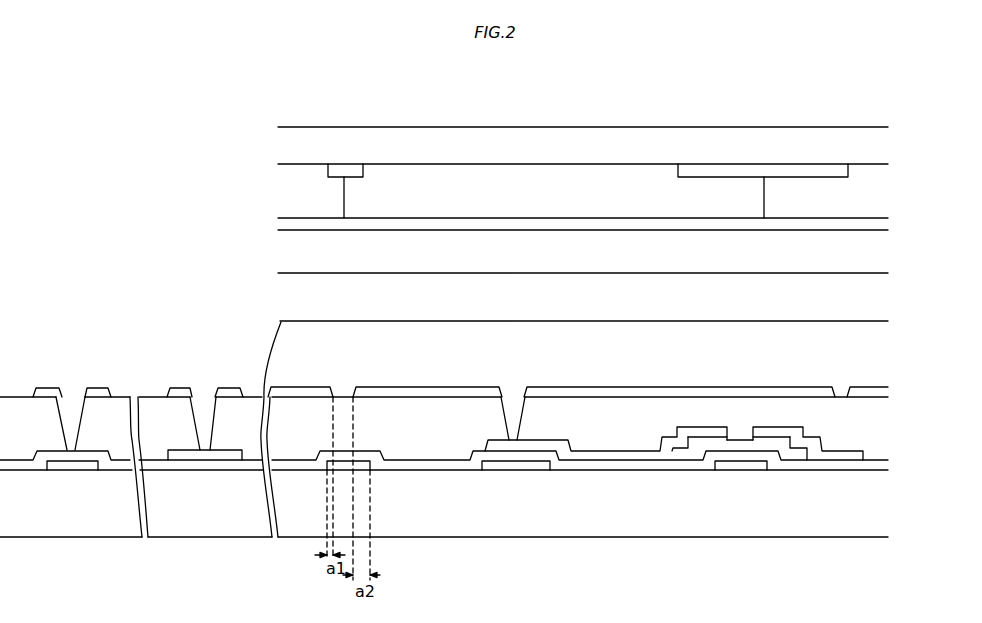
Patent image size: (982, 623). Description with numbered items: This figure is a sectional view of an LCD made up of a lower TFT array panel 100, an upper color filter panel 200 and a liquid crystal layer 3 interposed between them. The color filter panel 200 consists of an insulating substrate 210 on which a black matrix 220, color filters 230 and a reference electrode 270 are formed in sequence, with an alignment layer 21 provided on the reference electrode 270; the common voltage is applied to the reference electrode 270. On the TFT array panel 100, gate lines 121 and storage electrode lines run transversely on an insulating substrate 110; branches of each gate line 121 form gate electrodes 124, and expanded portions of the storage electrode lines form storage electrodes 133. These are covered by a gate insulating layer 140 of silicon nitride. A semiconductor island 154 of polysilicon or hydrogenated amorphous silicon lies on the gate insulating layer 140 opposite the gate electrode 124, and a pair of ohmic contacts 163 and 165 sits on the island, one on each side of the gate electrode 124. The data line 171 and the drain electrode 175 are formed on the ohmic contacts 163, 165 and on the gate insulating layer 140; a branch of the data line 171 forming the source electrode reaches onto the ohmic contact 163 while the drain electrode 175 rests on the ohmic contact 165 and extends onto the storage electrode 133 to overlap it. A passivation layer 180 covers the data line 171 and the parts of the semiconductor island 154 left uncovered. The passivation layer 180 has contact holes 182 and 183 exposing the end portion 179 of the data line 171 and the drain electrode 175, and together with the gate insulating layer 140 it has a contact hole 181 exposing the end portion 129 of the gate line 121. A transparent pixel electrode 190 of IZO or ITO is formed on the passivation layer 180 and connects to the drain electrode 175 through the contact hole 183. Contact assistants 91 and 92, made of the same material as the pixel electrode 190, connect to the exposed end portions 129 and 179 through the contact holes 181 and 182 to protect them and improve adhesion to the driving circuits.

The TFT array panel 100 is at (77, 290).
The color filter panel 200 is at (165, 144).
The liquid crystal layer 3 is at (275, 290).
The insulating substrate 110 is at (552, 537).
The gate line 121 is at (367, 465).
The gate electrode 124 is at (742, 467).
The end portion of gate line 129 is at (75, 465).
The storage electrode 133 is at (492, 470).
The gate insulating layer 140 is at (800, 463).
The semiconductor island 154 is at (685, 455).
The ohmic contact 163 is at (773, 435).
The ohmic contact 165 is at (713, 433).
The data line 171 is at (843, 457).
The drain electrode 175 is at (605, 455).
The end portion of data line 179 is at (208, 455).
The passivation layer 180 is at (582, 408).
The contact hole 181 is at (73, 403).
The contact hole 182 is at (210, 379).
The contact hole 183 is at (514, 378).
The pixel electrode 190 is at (297, 390).
The contact assistant 91 is at (47, 387).
The contact assistant 92 is at (181, 387).
The insulating substrate 210 is at (288, 143).
The black matrix 220 is at (336, 170).
The color filter 230 is at (422, 177).
The reference electrode 270 is at (288, 225).
The alignment layer 21 is at (288, 252).